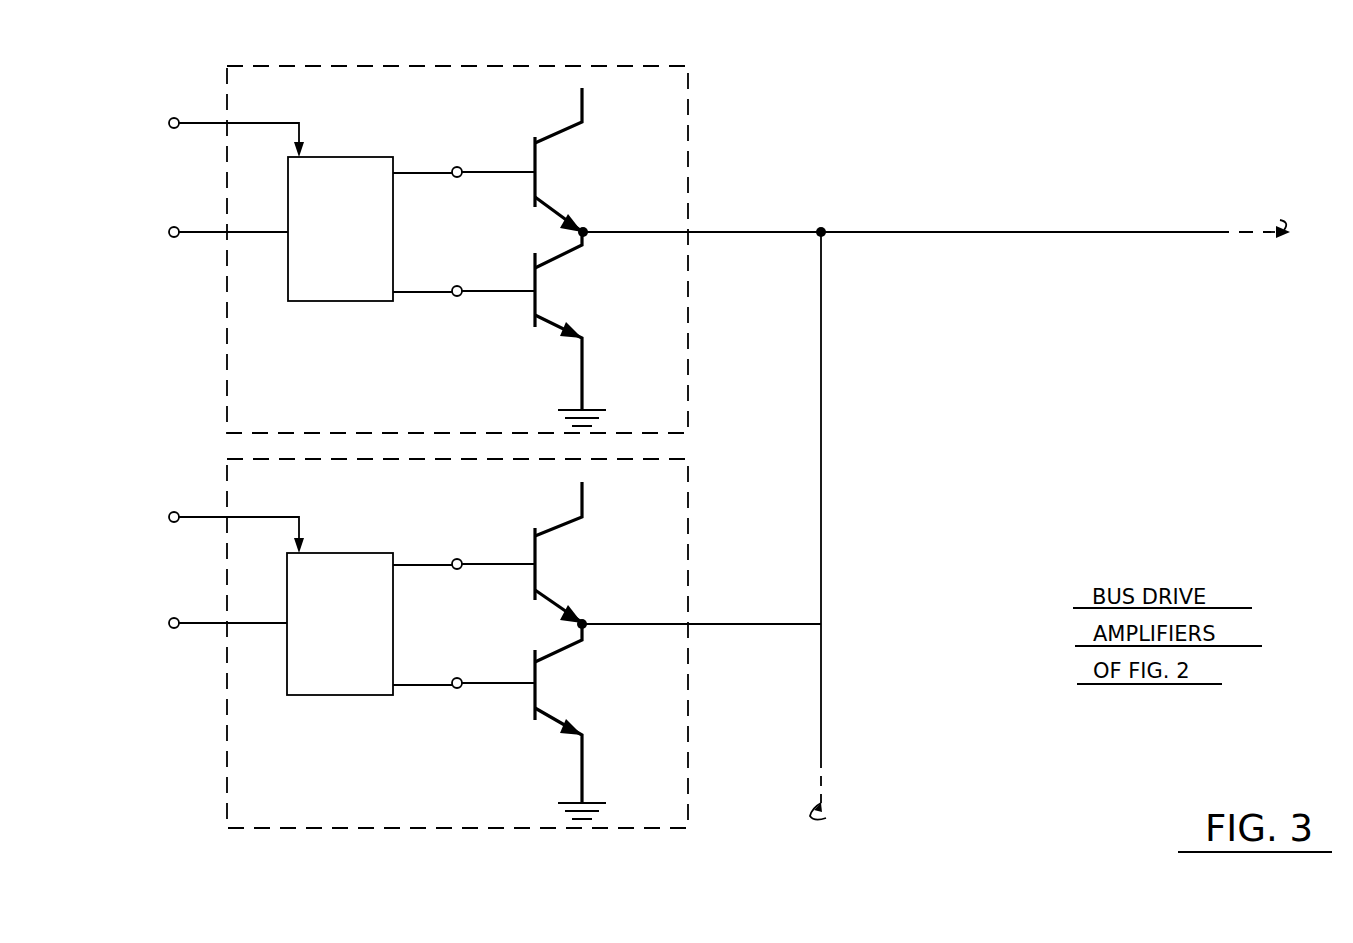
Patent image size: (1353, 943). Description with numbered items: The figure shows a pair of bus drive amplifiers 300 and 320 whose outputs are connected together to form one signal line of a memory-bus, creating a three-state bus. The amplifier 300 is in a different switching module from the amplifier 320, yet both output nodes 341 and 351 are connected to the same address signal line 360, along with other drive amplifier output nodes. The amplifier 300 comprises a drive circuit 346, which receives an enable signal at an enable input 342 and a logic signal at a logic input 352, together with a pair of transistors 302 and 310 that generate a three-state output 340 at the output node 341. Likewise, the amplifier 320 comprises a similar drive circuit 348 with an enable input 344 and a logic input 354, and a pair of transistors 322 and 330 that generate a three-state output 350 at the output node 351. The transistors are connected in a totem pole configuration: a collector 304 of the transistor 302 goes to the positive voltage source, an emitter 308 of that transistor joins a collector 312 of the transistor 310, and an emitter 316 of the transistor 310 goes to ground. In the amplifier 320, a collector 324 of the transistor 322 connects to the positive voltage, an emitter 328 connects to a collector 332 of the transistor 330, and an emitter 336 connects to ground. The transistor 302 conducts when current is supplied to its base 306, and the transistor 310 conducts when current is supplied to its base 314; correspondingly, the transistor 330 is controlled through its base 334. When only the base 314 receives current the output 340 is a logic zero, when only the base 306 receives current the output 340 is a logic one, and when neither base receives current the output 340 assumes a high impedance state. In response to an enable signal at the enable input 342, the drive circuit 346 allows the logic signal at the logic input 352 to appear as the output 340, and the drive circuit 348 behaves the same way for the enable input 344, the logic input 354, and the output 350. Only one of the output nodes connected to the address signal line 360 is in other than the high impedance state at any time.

The bus drive amplifier 300 is at (457, 249).
The transistor 302 is at (548, 126).
The collector 304 is at (590, 126).
The base 306 is at (464, 184).
The emitter 308 is at (578, 218).
The transistor 310 is at (545, 248).
The collector 312 is at (582, 258).
The base 314 is at (464, 304).
The emitter 316 is at (590, 336).
The bus drive amplifier 320 is at (457, 643).
The transistor 322 is at (548, 514).
The collector 324 is at (589, 518).
The emitter 328 is at (582, 612).
The transistor 330 is at (552, 742).
The collector 332 is at (581, 650).
The base 334 is at (464, 696).
The emitter 336 is at (590, 734).
The three-state output 340 is at (868, 208).
The output node 341 is at (590, 243).
The enable input 342 is at (178, 238).
The enable input 344 is at (178, 630).
The drive circuit 346 is at (340, 229).
The drive circuit 348 is at (340, 624).
The three-state output 350 is at (962, 590).
The output node 351 is at (590, 636).
The logic input 352 is at (178, 130).
The logic input 354 is at (178, 524).
The address signal line 360 is at (1087, 236).